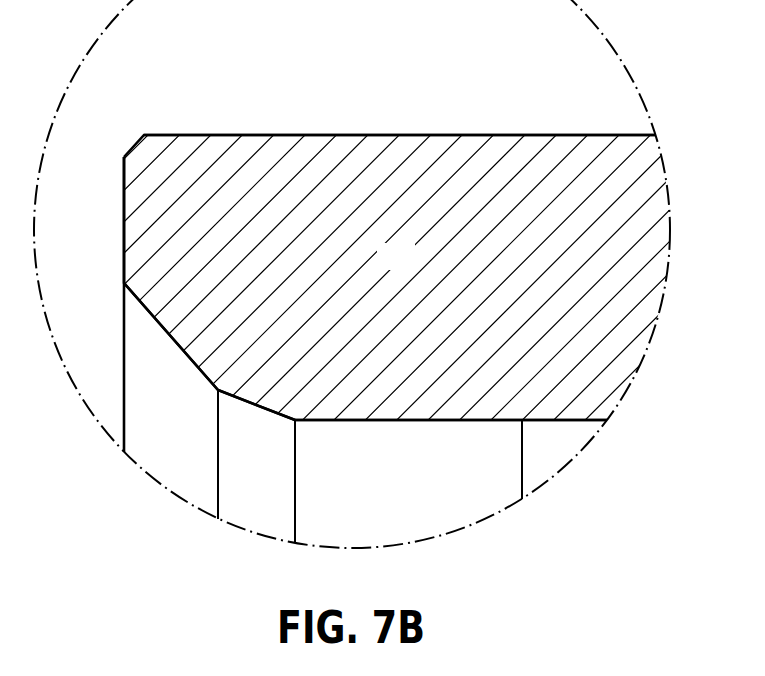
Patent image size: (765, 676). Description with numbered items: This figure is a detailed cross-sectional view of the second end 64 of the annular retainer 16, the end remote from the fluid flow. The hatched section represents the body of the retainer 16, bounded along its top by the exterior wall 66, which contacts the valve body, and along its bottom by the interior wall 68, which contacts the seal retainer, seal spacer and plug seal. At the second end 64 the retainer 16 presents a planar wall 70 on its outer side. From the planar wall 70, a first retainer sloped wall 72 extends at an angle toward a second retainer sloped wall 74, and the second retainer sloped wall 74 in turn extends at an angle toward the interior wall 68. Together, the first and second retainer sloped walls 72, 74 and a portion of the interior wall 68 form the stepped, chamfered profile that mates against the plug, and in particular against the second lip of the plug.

The retainer 16 is at (382, 338).
The second end 64 is at (496, 96).
The exterior wall 66 is at (352, 135).
The interior wall 68 is at (362, 421).
The planar wall 70 is at (124, 237).
The first retainer sloped wall 72 is at (167, 343).
The second retainer sloped wall 74 is at (233, 399).